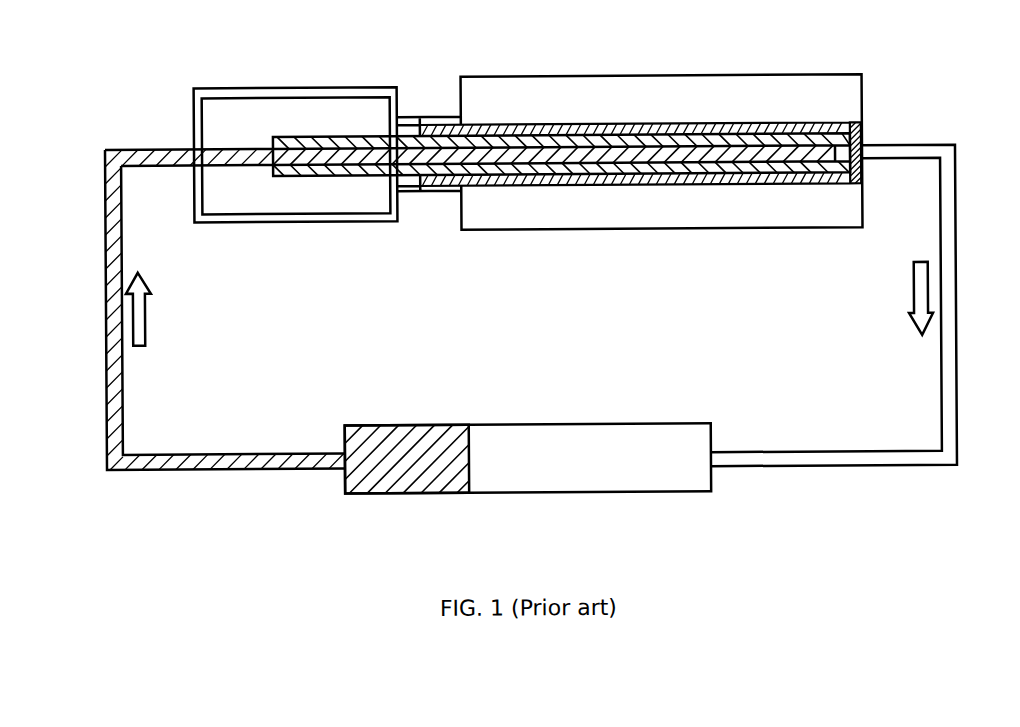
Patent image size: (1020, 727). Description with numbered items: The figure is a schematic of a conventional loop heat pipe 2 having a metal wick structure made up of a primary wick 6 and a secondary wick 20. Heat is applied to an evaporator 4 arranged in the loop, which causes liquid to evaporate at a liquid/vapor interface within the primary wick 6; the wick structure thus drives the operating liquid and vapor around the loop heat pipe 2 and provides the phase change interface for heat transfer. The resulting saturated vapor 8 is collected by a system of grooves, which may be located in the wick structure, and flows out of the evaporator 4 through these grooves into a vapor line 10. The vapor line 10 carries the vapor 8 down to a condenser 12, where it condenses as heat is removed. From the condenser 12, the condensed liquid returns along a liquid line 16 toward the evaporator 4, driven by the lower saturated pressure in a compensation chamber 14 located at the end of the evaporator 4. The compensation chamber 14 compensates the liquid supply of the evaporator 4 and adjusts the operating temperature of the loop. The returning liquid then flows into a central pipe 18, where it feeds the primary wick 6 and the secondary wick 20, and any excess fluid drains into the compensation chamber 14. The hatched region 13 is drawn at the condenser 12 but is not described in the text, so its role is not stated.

The loop heat pipe 2 is at (535, 301).
The evaporator 4 is at (798, 100).
The primary wick 6 is at (513, 132).
The saturated vapor 8 is at (921, 150).
The vapor line 10 is at (922, 296).
The condenser 12 is at (658, 472).
The heater 13 is at (363, 473).
The compensation chamber 14 is at (351, 204).
The liquid line 16 is at (131, 318).
The central pipe 18 is at (143, 150).
The secondary wick 20 is at (718, 177).